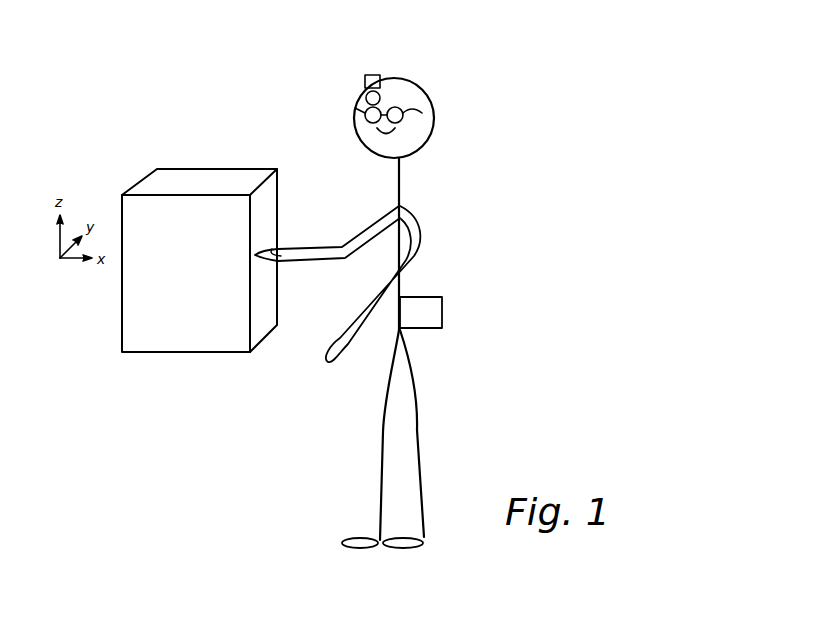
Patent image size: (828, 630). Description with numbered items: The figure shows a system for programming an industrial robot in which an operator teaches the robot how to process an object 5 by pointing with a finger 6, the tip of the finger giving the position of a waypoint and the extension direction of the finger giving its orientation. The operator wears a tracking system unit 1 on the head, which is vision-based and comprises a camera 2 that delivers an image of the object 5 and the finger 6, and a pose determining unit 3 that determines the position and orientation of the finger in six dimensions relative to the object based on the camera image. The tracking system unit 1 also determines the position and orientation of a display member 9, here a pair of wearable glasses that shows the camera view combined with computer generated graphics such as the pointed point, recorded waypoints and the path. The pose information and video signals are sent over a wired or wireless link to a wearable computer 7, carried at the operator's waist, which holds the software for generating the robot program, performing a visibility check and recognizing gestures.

The tracking system unit 1 is at (360, 64).
The camera 2 is at (365, 93).
The pose determining unit 3 is at (380, 74).
The object 5 is at (170, 177).
The finger 6 is at (273, 246).
The wearable computer 7 is at (438, 305).
The display member 9 is at (395, 110).